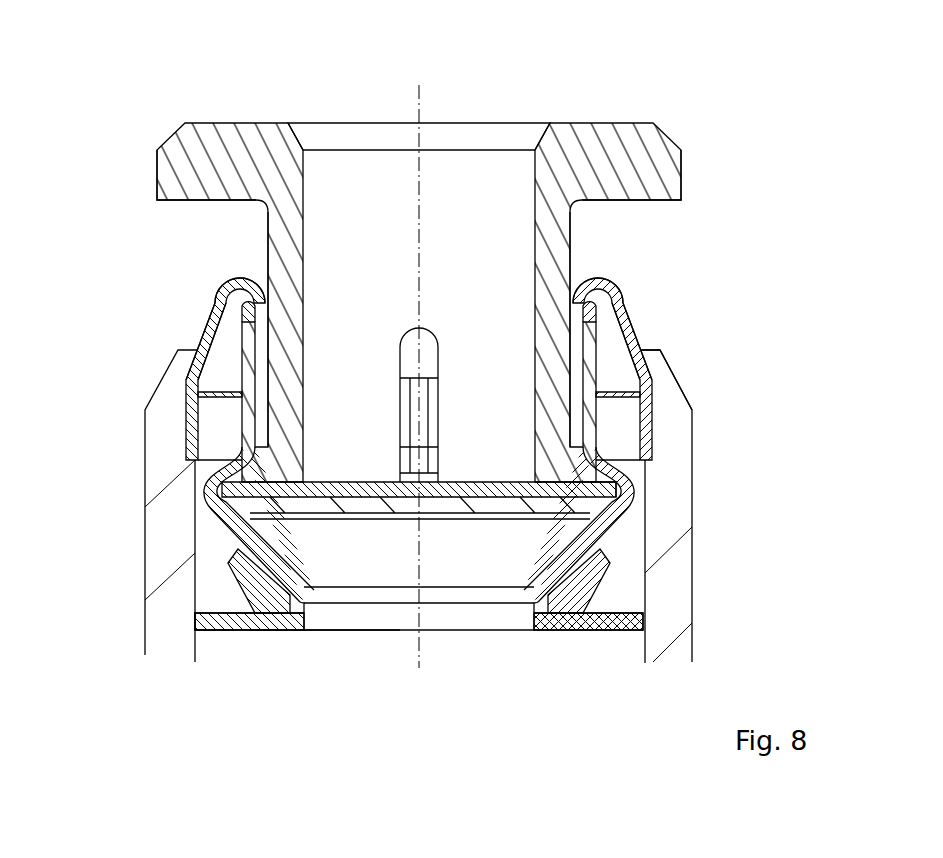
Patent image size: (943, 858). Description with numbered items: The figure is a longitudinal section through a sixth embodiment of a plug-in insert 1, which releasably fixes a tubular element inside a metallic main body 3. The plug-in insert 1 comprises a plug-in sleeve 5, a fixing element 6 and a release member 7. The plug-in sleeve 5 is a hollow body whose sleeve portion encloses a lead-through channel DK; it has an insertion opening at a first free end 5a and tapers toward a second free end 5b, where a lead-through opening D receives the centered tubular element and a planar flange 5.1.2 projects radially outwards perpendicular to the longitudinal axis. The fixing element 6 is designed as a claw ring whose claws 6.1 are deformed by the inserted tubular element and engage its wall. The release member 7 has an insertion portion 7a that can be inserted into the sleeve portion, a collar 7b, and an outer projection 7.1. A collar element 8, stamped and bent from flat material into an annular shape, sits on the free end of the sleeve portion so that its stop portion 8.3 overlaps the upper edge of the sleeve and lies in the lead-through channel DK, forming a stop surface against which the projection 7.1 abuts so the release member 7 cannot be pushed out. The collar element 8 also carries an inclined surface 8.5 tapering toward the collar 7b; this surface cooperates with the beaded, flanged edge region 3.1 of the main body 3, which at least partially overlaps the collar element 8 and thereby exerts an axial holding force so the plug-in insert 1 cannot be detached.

The plug-in insert 1 is at (768, 72).
The lead-through channel DK is at (329, 116).
The release member 7 is at (426, 302).
The insertion portion 7a is at (268, 245).
The collar 7b is at (683, 178).
The projection 7.1 is at (244, 396).
The collar element 8 is at (418, 360).
The stop portion 8.3 is at (600, 322).
The spring leg 8.5 is at (630, 337).
The plug-in sleeve 5 is at (334, 548).
The first free end 5a is at (190, 290).
The second free end 5b is at (612, 642).
The flange 5.1.2 is at (203, 640).
The lead-through opening D is at (316, 636).
The fixing element 6 is at (427, 530).
The claws 6.1 is at (540, 512).
The main body 3 is at (423, 506).
The edge region 3.1 is at (672, 375).